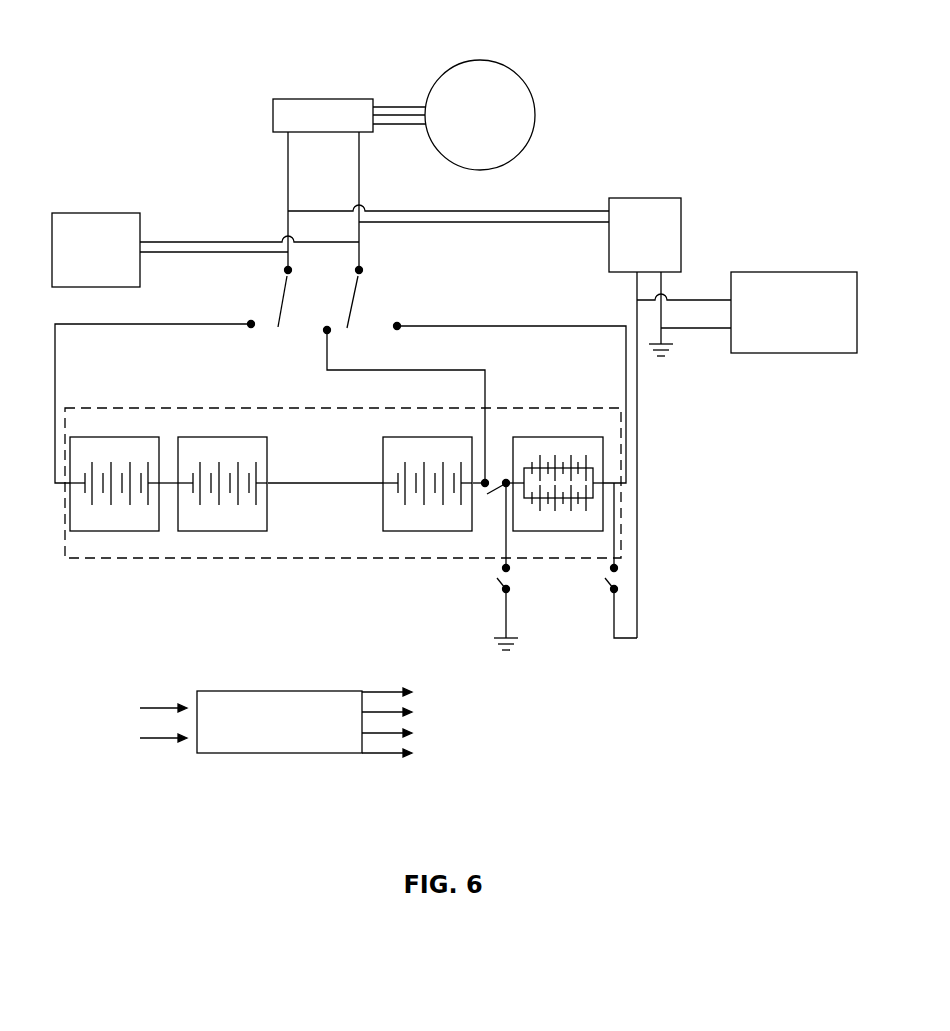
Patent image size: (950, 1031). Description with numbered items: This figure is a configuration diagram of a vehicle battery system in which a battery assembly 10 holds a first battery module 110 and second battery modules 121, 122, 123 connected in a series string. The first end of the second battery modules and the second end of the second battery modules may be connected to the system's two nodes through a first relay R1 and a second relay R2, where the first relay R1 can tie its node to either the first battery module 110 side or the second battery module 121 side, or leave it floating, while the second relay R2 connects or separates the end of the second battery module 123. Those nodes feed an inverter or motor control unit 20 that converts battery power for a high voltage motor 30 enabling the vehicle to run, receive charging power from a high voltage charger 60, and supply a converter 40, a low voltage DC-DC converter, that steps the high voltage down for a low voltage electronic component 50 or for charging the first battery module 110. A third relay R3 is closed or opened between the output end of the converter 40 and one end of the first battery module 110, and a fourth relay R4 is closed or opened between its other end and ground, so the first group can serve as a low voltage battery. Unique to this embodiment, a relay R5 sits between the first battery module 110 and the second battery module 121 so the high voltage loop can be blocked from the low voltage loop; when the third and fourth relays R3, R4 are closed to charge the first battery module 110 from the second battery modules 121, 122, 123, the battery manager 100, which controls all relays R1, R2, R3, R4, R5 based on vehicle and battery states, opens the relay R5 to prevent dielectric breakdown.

The battery assembly 10 is at (317, 558).
The inverter (motor control unit) 20 is at (323, 99).
The high voltage motor 30 is at (512, 68).
The converter 40 is at (609, 257).
The low voltage electronic component 50 is at (788, 272).
The high voltage charger 60 is at (96, 213).
The battery manager 100 is at (273, 753).
The first battery module 110 is at (555, 532).
The second battery module 121 is at (424, 532).
The second battery module 122 is at (225, 532).
The second battery module 123 is at (117, 532).
The first relay R1 is at (378, 308).
The second relay R2 is at (260, 303).
The third relay R3 is at (605, 598).
The fourth relay R4 is at (494, 598).
The relay R5 is at (496, 475).